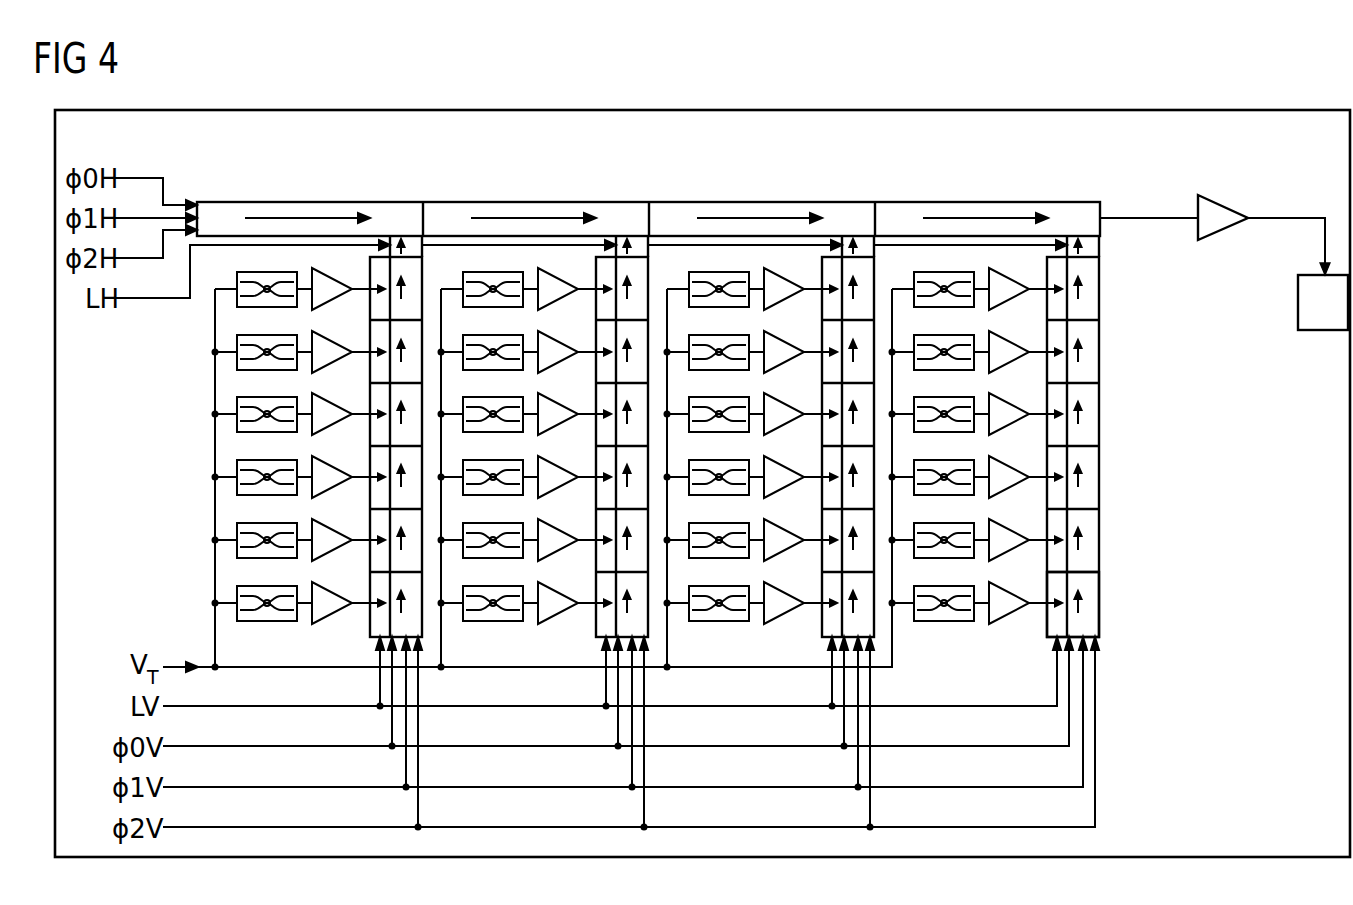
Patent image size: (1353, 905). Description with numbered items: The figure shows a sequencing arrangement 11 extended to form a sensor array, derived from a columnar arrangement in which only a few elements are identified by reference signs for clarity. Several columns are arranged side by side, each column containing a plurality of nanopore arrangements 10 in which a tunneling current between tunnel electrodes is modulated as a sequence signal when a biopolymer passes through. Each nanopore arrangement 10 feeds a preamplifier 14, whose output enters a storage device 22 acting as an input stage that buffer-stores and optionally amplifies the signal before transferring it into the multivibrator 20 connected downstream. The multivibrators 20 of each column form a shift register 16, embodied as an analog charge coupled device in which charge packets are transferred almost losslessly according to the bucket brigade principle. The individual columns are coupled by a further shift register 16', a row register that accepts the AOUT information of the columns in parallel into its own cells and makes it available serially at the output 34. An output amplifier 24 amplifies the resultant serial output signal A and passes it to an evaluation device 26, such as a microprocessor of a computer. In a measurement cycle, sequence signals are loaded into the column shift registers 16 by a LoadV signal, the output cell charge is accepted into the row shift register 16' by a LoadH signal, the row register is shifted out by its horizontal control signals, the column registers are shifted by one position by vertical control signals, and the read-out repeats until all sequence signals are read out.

The sequencing arrangement 11 is at (709, 110).
The further shift register 16' is at (648, 178).
The multivibrator 20 is at (383, 202).
The shift register 16 is at (1063, 467).
The storage device 22 is at (1060, 583).
The nanopore arrangement 10 is at (943, 622).
The preamplifier 14 is at (1010, 624).
The output 34 is at (1100, 212).
The output amplifier 24 is at (1230, 208).
The output signal A is at (1288, 217).
The evaluation device 26 is at (1326, 331).